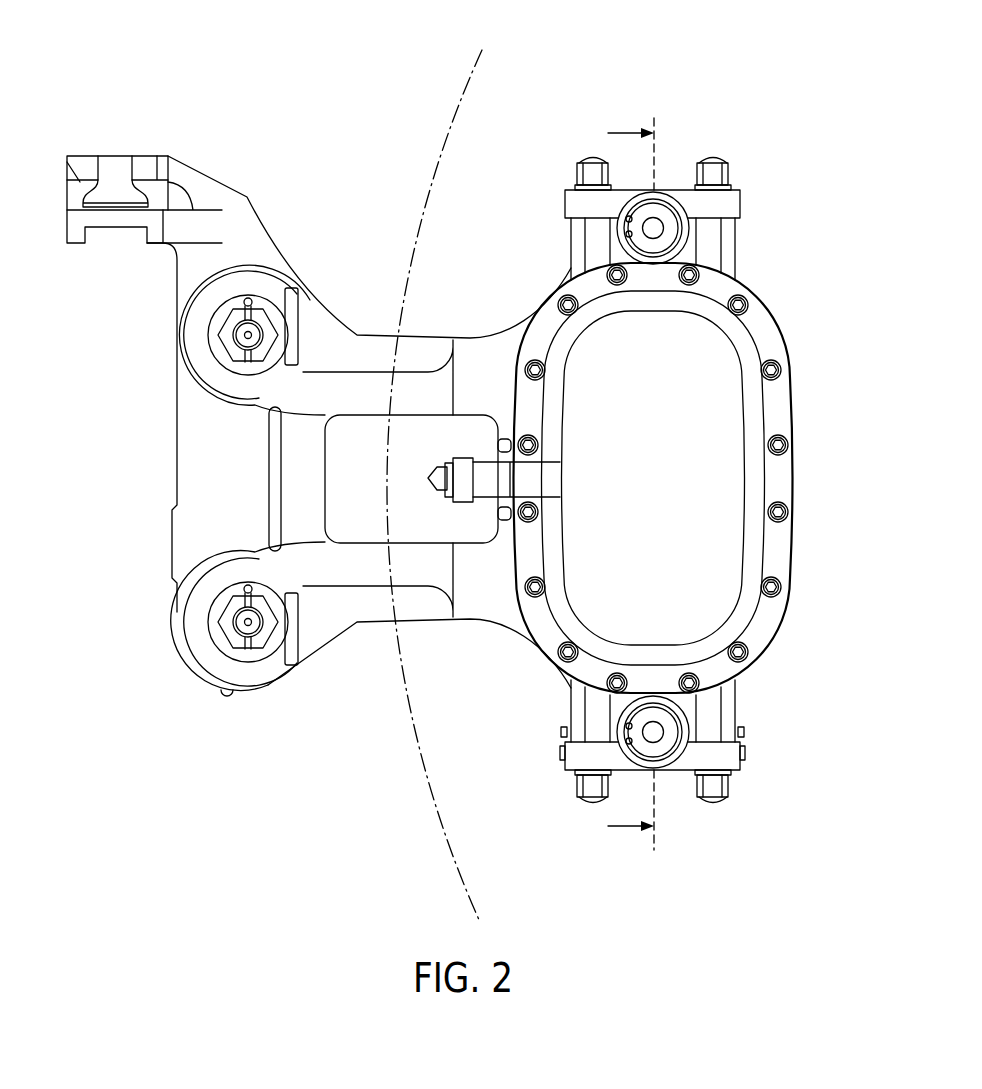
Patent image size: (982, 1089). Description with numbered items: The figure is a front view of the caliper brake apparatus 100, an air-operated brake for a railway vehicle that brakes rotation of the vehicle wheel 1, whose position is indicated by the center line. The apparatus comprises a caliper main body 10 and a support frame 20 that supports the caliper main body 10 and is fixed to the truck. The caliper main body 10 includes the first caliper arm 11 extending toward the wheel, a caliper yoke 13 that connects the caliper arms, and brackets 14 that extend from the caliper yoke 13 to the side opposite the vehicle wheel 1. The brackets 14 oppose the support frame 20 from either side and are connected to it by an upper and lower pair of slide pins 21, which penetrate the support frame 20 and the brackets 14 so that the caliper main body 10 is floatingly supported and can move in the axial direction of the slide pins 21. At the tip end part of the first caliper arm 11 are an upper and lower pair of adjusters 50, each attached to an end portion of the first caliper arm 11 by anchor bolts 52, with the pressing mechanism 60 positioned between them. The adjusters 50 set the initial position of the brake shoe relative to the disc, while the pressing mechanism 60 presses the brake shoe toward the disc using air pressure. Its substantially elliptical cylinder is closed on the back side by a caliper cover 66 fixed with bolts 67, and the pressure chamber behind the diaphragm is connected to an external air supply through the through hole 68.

The vehicle wheel 1 is at (446, 130).
The caliper main body 10 is at (428, 328).
The first caliper arm 11 is at (365, 348).
The caliper yoke 13 is at (310, 484).
The bracket 14 is at (268, 284).
The support frame 20 is at (197, 184).
The slide pin 21 is at (240, 333).
The adjuster 50 is at (730, 204).
The anchor bolt 52 is at (596, 176).
The pressing mechanism 60 is at (732, 351).
The caliper cover 66 is at (727, 416).
The bolt 67 is at (787, 511).
The through hole 68 is at (449, 500).
The caliper brake apparatus 100 is at (770, 117).